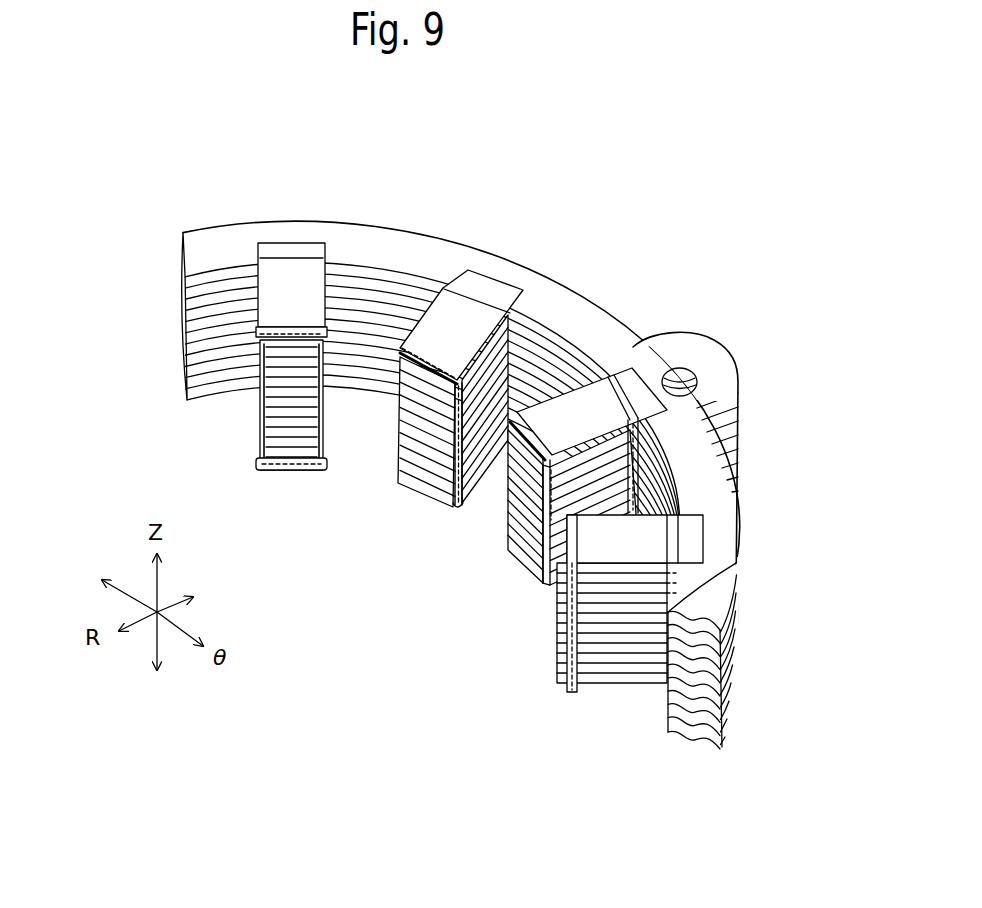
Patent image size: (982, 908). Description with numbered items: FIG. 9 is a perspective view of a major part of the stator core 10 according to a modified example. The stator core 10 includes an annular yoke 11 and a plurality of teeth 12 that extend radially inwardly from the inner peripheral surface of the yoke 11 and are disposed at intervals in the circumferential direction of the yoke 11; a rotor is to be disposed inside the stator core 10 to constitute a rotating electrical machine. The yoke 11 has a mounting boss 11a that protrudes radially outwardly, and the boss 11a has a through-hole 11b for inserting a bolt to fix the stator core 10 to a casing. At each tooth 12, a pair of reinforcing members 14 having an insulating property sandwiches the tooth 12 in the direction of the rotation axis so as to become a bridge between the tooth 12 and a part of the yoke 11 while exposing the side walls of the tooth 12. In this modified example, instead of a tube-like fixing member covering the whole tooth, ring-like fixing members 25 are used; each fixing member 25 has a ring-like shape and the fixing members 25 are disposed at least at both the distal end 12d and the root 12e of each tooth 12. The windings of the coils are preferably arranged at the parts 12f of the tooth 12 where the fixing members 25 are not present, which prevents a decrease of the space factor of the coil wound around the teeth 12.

The stator core 10 is at (150, 338).
The yoke 11 is at (383, 256).
The mounting boss 11a is at (695, 343).
The through-hole 11b is at (697, 379).
The tooth 12 is at (273, 433).
The distal end 12d is at (252, 332).
The root 12e is at (267, 268).
The part where the fixing members are not present 12f is at (283, 292).
The reinforcing member 14 is at (285, 246).
The fixing member 25 is at (306, 332).